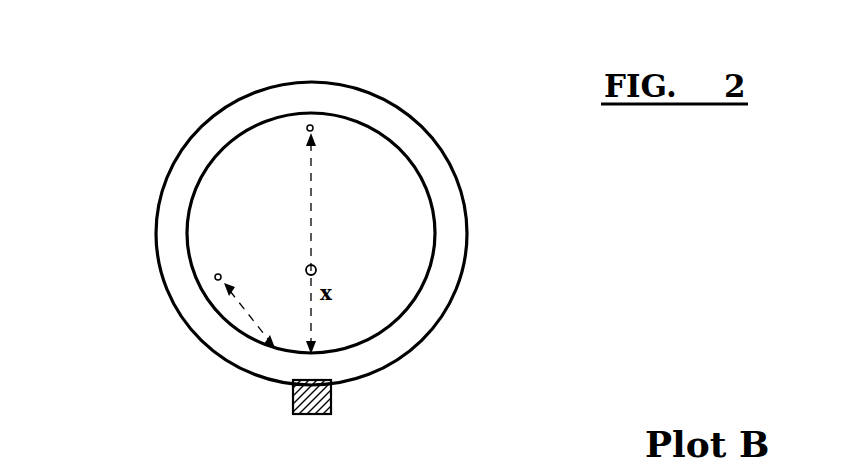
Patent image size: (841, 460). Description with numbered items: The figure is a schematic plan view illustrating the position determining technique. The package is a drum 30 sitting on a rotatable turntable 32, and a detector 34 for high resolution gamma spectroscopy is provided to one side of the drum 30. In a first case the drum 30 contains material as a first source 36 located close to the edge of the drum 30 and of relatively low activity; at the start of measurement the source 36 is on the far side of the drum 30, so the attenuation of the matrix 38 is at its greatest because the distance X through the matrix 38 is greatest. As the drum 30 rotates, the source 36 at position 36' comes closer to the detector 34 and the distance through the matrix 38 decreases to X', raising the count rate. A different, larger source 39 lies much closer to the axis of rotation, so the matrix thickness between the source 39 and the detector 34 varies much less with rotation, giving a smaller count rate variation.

The drum 30 is at (392, 138).
The turntable 32 is at (468, 233).
The detector 34 is at (331, 400).
The first source 36 is at (256, 72).
The source position 36' is at (168, 310).
The matrix 38 is at (326, 233).
The source 39 is at (317, 270).